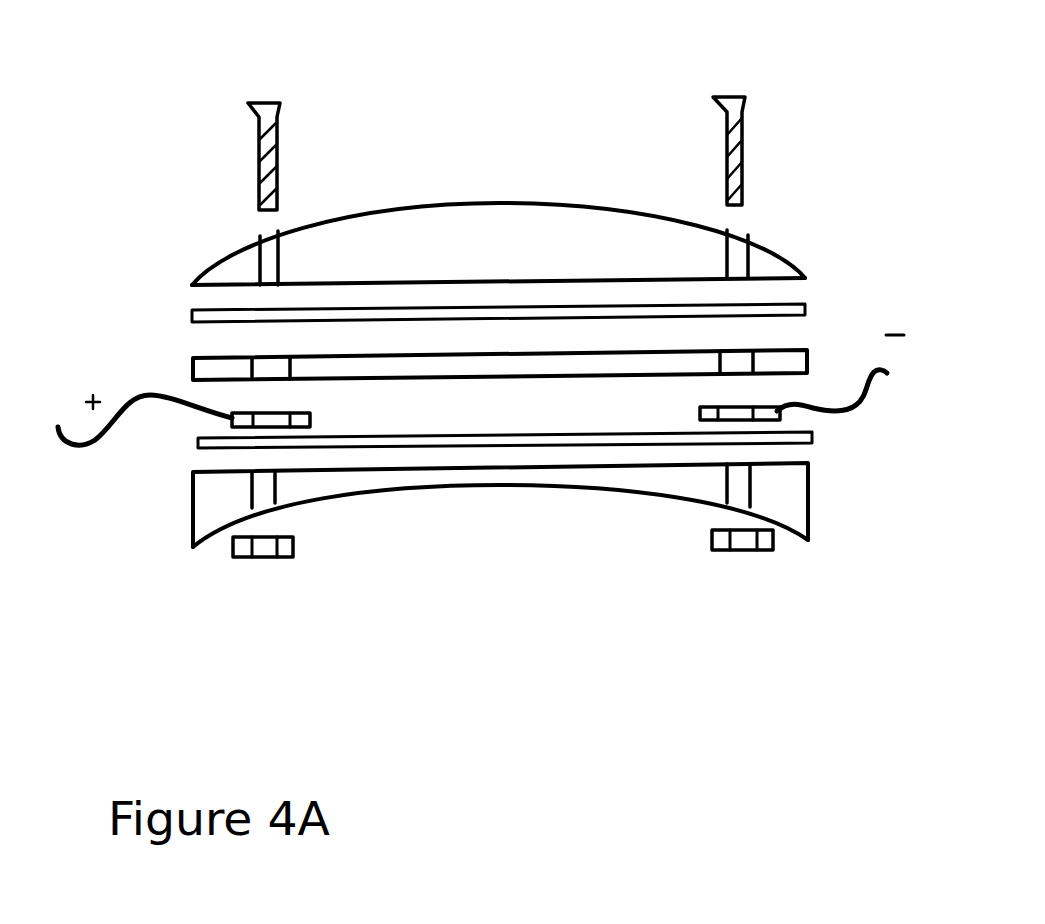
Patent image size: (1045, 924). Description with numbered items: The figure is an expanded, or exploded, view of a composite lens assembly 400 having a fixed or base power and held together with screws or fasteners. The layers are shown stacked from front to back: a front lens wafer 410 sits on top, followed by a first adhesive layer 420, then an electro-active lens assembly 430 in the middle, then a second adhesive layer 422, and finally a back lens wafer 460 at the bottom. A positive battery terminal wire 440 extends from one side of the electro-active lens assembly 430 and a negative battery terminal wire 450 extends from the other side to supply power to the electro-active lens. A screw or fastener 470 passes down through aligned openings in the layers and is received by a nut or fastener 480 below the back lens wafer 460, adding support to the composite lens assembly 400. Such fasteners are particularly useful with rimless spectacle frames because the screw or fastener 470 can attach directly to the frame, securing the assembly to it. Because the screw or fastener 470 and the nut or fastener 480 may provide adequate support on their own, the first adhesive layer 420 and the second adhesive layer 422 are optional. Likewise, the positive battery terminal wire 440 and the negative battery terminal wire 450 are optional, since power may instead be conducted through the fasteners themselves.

The composite lens assembly 400 is at (738, 786).
The front lens wafer 410 is at (300, 263).
The first adhesive layer 420 is at (378, 320).
The second adhesive layer 422 is at (375, 442).
The electro-active lens assembly 430 is at (537, 365).
The positive battery terminal wire 440 is at (103, 450).
The negative battery terminal wire 450 is at (843, 422).
The back lens wafer 460 is at (500, 530).
The screw or fastener 470 is at (720, 167).
The nut or fastener 480 is at (737, 558).